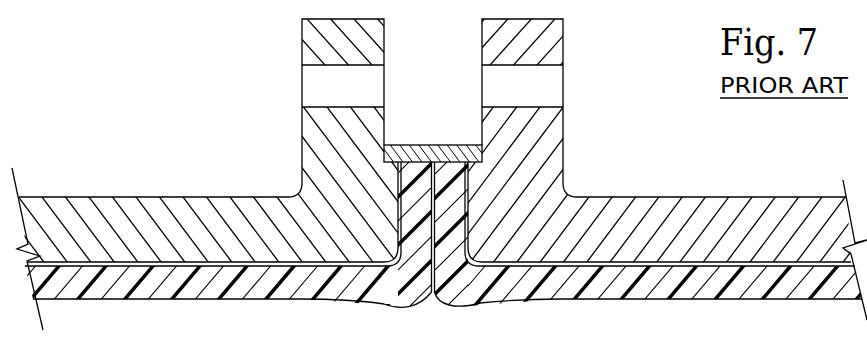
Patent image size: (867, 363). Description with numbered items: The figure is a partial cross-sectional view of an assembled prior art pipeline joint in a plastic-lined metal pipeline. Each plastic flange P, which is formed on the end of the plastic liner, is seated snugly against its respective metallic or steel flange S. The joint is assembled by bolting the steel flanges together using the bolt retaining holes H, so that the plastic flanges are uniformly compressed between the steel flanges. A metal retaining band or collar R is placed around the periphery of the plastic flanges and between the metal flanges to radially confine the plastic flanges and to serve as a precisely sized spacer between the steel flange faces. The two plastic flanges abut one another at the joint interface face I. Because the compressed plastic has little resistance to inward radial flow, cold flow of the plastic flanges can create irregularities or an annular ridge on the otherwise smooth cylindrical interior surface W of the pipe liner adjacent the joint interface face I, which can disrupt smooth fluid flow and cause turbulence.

The bolt retaining holes H is at (508, 86).
The metal retaining band or collar R is at (427, 153).
The steel flange S is at (326, 146).
The interior surface of the pipe liner W is at (248, 299).
The plastic flange P is at (413, 250).
The joint interface face I is at (432, 295).